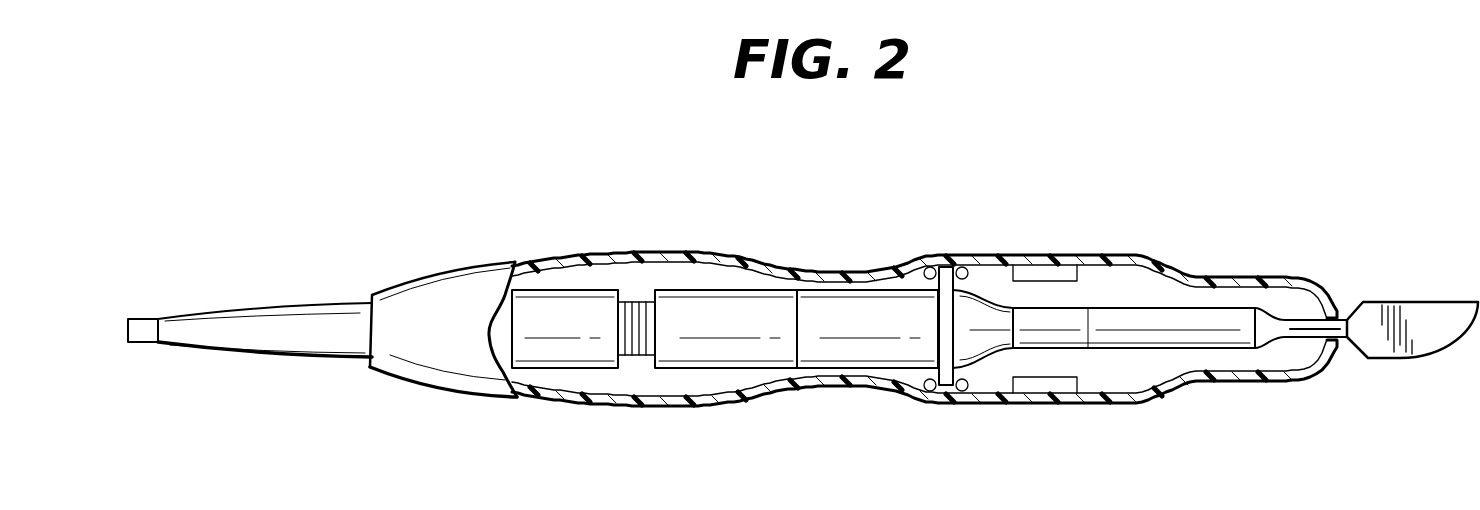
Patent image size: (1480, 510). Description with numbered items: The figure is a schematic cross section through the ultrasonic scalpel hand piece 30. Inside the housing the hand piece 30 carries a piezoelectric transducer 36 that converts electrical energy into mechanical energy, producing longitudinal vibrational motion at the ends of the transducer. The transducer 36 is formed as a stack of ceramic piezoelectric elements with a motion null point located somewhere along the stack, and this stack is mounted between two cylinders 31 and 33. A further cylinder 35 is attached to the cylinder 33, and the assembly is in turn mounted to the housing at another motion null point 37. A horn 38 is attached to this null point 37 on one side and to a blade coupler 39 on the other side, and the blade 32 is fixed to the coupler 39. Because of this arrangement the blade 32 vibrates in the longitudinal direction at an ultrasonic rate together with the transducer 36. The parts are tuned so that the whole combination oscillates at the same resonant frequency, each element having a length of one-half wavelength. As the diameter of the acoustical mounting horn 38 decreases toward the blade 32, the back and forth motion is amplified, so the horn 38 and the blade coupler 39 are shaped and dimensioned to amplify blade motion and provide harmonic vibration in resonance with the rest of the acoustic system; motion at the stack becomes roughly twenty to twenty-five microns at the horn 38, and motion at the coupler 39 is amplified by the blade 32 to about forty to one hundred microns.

The ultrasonic hand piece 30 is at (814, 248).
The cylinder 31 is at (541, 310).
The blade 32 is at (1418, 318).
The cylinder 33 is at (722, 345).
The cylinder 35 is at (847, 345).
The piezoelectric transducer 36 is at (633, 305).
The motion null point 37 is at (955, 265).
The horn 38 is at (996, 318).
The blade coupler 39 is at (1176, 323).